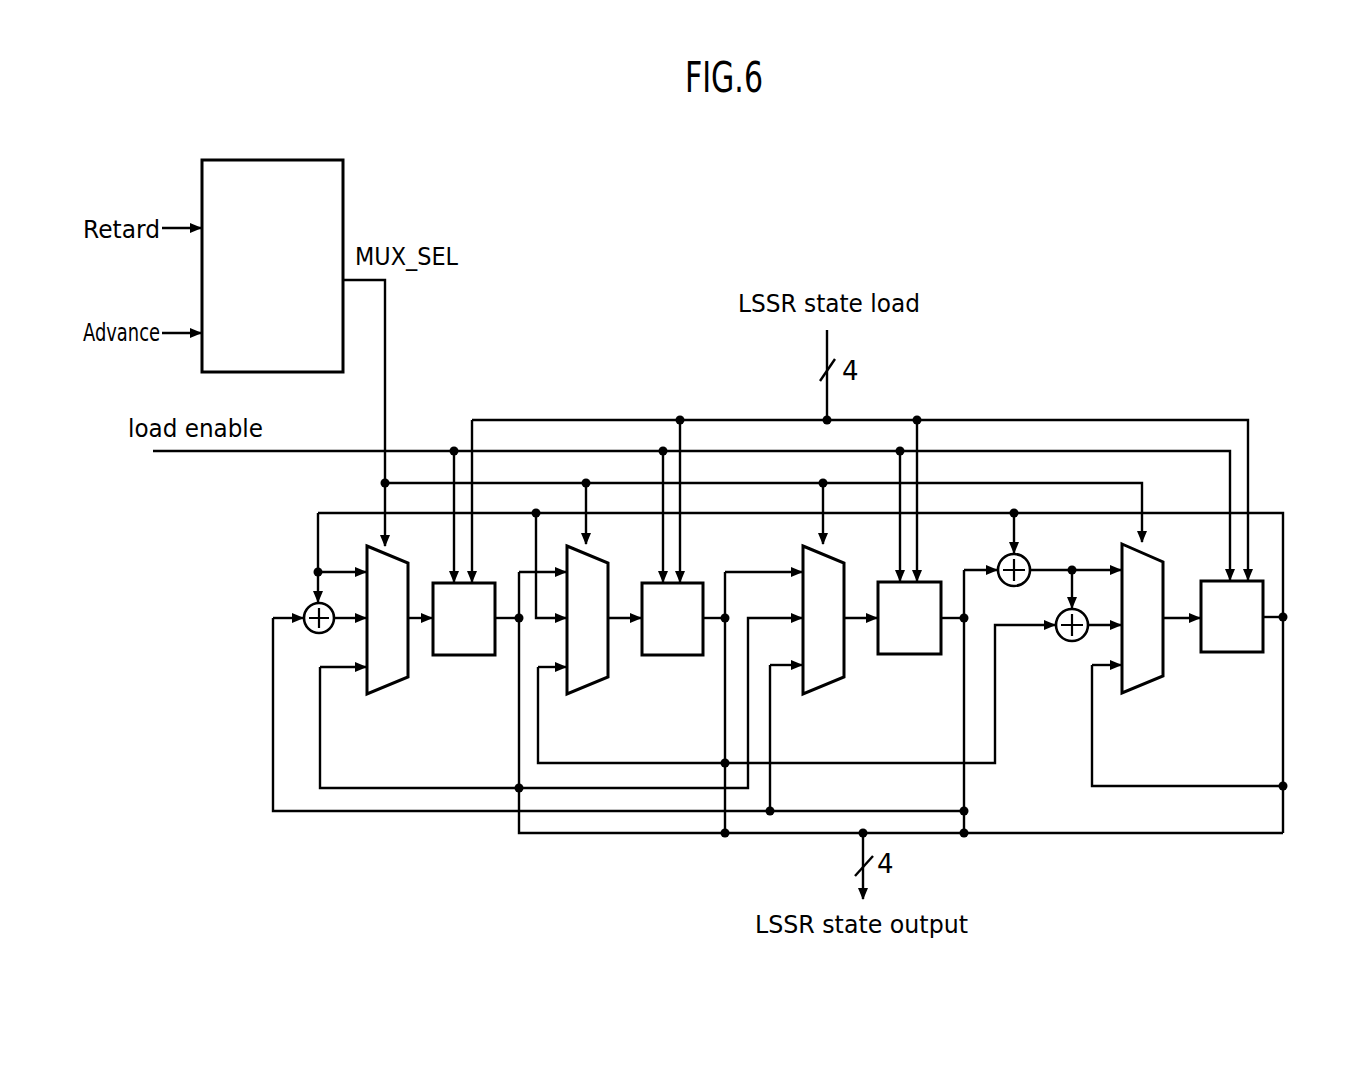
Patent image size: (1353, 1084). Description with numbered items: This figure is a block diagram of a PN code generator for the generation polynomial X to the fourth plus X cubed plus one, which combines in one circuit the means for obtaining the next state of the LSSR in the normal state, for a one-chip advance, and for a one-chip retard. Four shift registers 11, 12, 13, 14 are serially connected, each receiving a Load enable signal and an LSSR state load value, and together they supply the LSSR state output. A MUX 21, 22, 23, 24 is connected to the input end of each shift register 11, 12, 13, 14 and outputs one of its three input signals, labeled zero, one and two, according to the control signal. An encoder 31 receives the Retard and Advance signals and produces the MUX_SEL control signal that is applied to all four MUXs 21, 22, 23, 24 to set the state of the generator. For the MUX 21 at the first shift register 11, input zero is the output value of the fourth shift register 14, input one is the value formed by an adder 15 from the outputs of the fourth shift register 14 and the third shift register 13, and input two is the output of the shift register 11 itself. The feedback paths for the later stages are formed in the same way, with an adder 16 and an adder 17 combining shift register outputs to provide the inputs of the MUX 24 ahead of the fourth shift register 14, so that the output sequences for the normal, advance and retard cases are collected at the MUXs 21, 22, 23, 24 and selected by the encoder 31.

The encoder 31 is at (343, 192).
The adder 15 is at (305, 606).
The adder 16 is at (1027, 558).
The adder 17 is at (1062, 640).
The MUX 21 is at (392, 684).
The MUX 22 is at (594, 682).
The MUX 23 is at (828, 684).
The MUX 24 is at (1147, 683).
The first shift register 11 is at (465, 656).
The second shift register 12 is at (674, 656).
The third shift register 13 is at (909, 655).
The fourth shift register 14 is at (1233, 653).